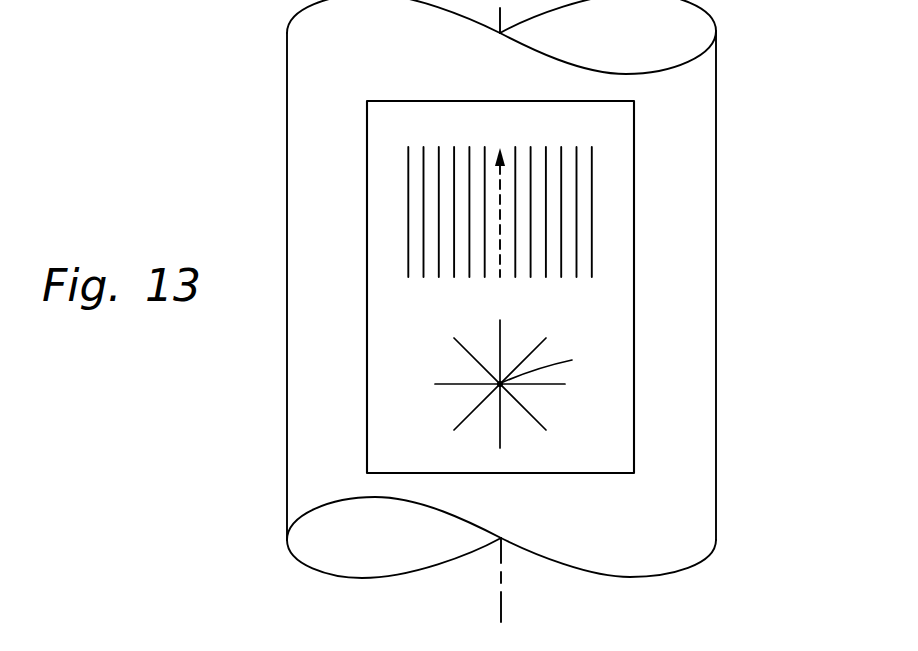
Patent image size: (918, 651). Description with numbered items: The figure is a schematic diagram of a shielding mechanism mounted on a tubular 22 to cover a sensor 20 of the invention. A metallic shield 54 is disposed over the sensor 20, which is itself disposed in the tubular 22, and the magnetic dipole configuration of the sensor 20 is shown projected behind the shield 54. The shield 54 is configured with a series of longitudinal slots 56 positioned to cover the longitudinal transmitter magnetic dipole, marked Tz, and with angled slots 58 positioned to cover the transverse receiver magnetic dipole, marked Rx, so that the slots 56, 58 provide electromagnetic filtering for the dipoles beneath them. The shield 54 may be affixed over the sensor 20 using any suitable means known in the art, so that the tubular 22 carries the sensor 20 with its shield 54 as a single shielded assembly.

The sensor 20 is at (530, 287).
The tubular 22 is at (705, 115).
The metallic shield 54 is at (634, 300).
The longitudinal slots 56 is at (592, 213).
The angled slots 58 is at (467, 417).